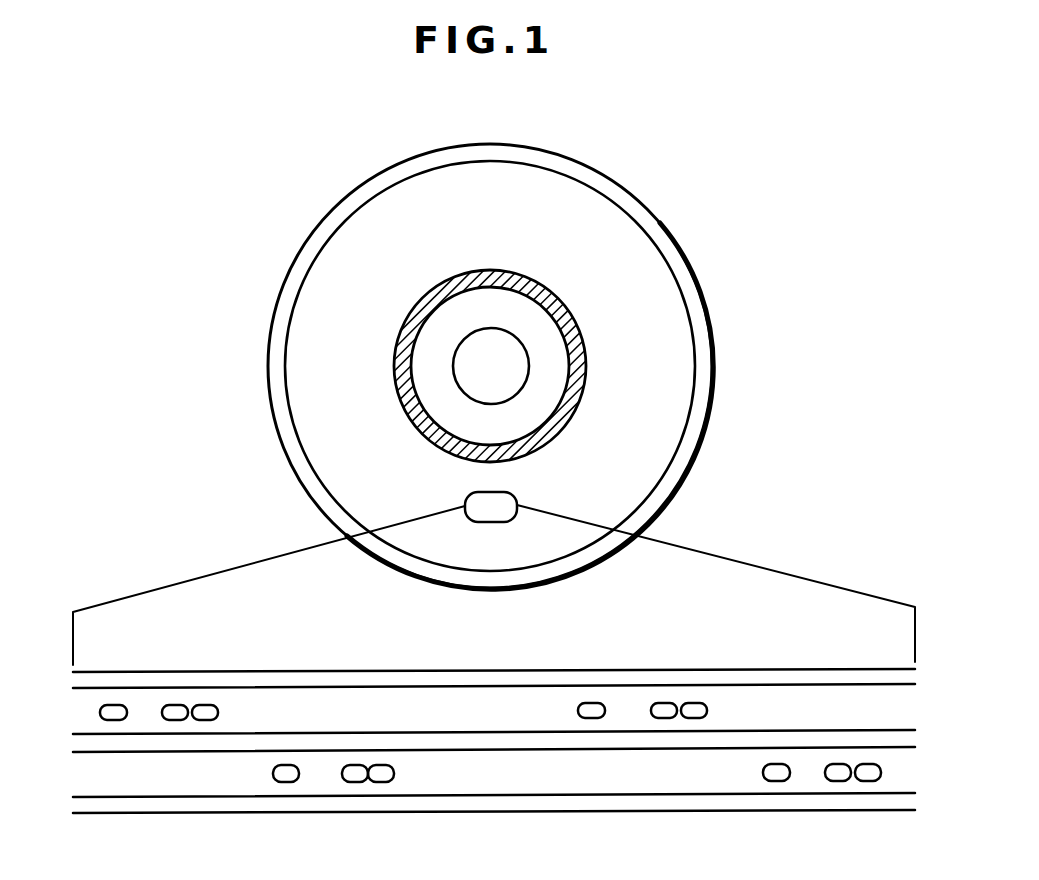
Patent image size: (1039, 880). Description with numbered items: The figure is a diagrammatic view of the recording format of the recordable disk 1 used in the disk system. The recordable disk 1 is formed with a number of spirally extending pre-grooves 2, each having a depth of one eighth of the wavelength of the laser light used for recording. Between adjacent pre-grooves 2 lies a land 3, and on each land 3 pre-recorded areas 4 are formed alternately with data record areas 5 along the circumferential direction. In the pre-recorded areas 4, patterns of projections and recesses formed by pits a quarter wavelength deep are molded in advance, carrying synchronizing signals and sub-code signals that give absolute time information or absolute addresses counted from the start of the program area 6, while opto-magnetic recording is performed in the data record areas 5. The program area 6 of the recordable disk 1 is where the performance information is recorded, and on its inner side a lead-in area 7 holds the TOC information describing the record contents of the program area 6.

The recordable disk 1 is at (712, 288).
The pre-grooves 2 is at (905, 797).
The land 3 is at (735, 758).
The pre-recorded areas 4 is at (114, 705).
The data record areas 5 is at (369, 697).
The program area 6 is at (585, 242).
The lead-in area 7 is at (586, 378).